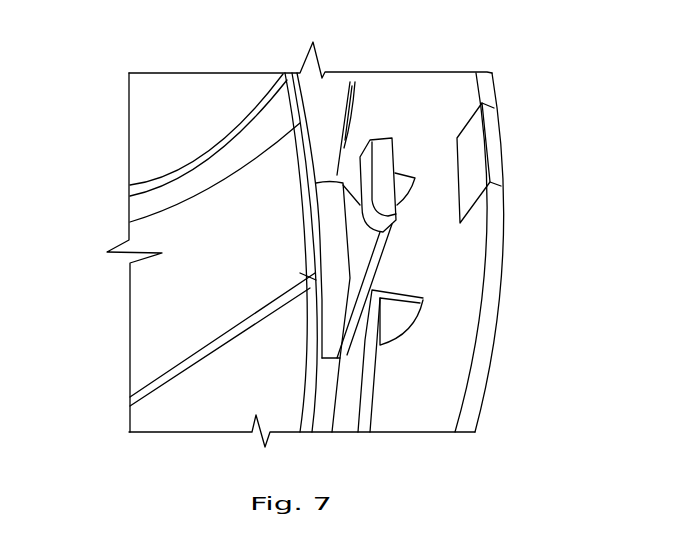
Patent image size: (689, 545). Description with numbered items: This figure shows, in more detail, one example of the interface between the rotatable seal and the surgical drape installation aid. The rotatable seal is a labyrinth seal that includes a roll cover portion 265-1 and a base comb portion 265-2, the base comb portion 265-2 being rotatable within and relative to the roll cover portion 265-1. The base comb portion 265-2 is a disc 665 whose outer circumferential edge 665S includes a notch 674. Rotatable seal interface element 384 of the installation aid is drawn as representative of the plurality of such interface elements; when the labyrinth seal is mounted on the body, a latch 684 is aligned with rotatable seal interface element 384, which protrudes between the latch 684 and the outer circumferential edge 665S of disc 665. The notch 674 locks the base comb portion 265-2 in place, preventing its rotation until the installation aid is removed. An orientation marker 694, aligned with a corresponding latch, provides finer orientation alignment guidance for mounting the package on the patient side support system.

The disc 665 is at (313, 162).
The outer circumferential edge 665S is at (317, 390).
The notch 674 is at (312, 293).
The latch 684 is at (385, 160).
The rotatable seal interface element 384 is at (357, 78).
The orientation marker 694 is at (500, 140).
The roll cover portion 265-1 is at (452, 328).
The base comb portion 265-2 is at (180, 307).